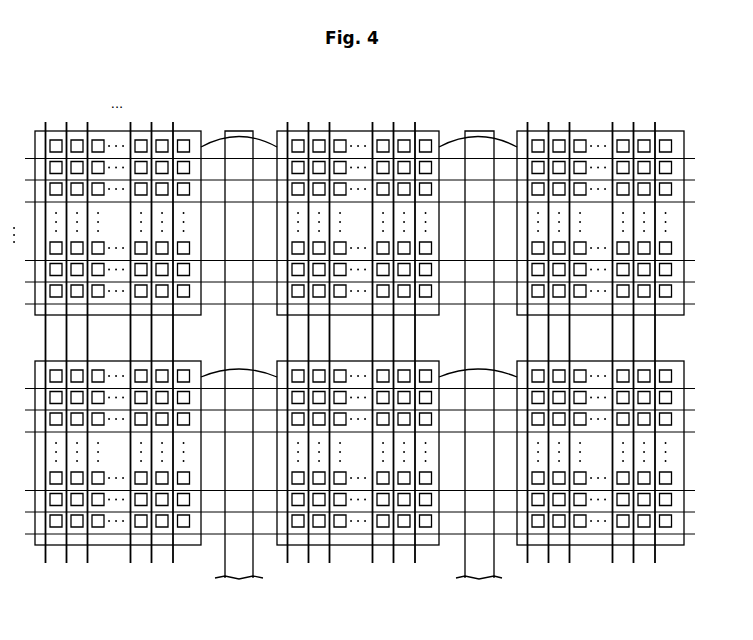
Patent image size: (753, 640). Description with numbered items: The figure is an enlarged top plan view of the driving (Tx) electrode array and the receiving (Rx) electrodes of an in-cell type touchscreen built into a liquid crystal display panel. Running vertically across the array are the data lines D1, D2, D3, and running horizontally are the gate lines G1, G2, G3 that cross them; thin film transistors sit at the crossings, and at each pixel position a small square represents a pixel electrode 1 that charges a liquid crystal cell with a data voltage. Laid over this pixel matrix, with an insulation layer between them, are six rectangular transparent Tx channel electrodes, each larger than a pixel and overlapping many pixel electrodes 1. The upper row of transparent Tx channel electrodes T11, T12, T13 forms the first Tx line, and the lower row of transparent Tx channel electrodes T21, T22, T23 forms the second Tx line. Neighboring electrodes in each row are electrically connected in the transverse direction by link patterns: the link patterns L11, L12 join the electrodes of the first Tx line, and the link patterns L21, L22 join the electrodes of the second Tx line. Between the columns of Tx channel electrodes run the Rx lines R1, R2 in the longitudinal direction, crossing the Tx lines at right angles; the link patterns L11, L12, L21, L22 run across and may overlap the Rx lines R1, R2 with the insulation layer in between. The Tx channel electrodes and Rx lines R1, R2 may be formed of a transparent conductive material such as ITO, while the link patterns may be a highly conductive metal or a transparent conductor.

The pixel electrode 1 is at (142, 140).
The data line D1 is at (45, 333).
The data line D2 is at (67, 333).
The data line D3 is at (88, 333).
The gate line G1 is at (350, 159).
The gate line G2 is at (350, 180).
The gate line G3 is at (350, 203).
The transparent Tx channel electrode T11 is at (184, 131).
The transparent Tx channel electrode T12 is at (426, 131).
The transparent Tx channel electrode T13 is at (667, 131).
The transparent Tx channel electrode T21 is at (189, 361).
The transparent Tx channel electrode T22 is at (430, 361).
The transparent Tx channel electrode T23 is at (671, 361).
The link pattern L11 is at (238, 137).
The link pattern L12 is at (478, 137).
The link pattern L21 is at (239, 368).
The link pattern L22 is at (479, 368).
The Rx line R1 is at (240, 581).
The Rx line R2 is at (481, 581).